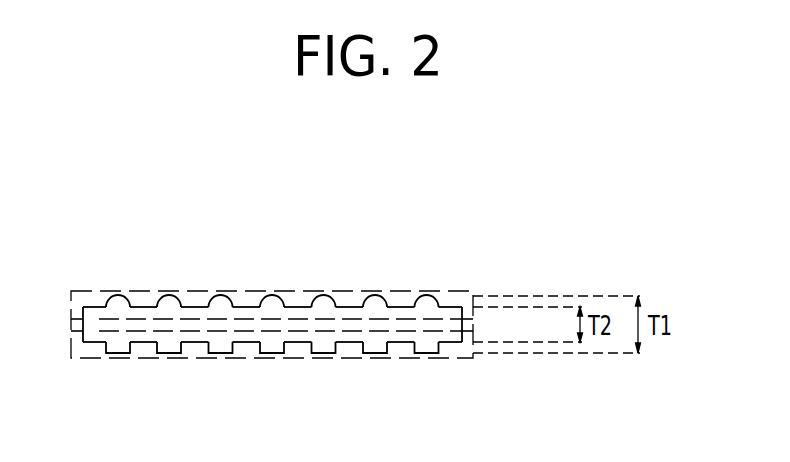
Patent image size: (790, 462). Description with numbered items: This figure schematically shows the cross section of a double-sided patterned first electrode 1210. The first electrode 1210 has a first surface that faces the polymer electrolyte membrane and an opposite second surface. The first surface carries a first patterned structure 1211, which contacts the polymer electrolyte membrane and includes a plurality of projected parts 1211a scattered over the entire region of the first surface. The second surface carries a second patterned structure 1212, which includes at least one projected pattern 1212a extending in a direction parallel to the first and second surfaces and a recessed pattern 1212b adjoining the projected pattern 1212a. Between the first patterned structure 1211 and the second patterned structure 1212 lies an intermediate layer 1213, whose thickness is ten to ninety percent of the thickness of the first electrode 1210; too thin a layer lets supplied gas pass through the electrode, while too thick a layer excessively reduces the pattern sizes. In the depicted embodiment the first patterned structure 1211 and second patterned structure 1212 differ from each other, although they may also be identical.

The first electrode 1210 is at (315, 196).
The first patterned structure 1211 is at (193, 292).
The projected parts 1211a is at (324, 303).
The second patterned structure 1212 is at (193, 359).
The projected pattern 1212a is at (323, 345).
The recessed pattern 1212b is at (402, 350).
The intermediate layer 1213 is at (491, 308).